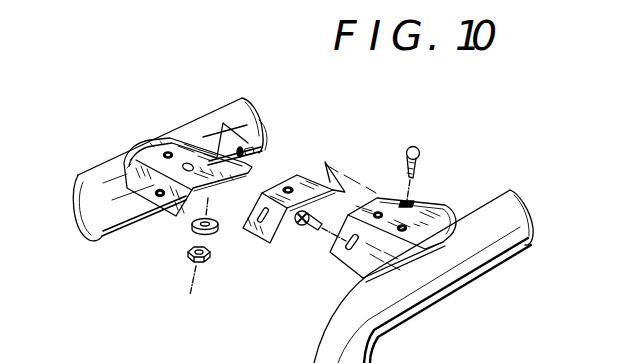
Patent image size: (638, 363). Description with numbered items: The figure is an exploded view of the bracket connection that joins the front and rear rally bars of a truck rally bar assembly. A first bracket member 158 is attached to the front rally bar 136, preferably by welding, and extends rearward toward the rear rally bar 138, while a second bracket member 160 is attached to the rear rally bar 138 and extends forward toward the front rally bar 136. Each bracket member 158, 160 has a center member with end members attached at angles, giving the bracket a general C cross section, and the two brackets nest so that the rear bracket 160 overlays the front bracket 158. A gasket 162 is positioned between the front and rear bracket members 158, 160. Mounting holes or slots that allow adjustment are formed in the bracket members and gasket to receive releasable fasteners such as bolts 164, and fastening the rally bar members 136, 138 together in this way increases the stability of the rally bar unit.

The front rally bar 136 is at (110, 164).
The rear rally bar 138 is at (465, 292).
The first bracket member 158 is at (163, 218).
The second bracket member 160 is at (328, 254).
The gasket 162 is at (242, 236).
The bolts 164 is at (418, 152).